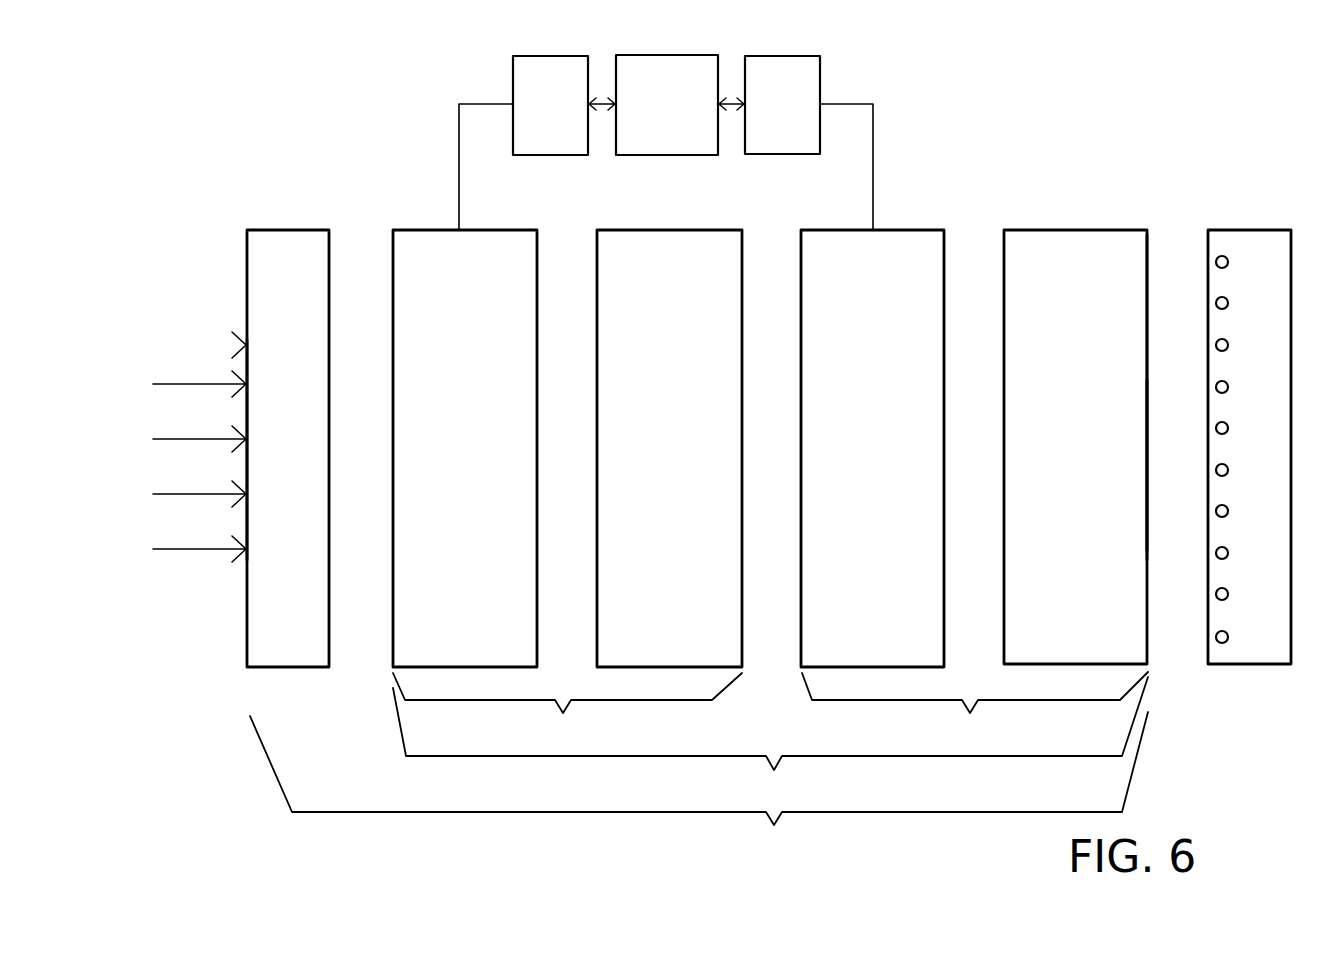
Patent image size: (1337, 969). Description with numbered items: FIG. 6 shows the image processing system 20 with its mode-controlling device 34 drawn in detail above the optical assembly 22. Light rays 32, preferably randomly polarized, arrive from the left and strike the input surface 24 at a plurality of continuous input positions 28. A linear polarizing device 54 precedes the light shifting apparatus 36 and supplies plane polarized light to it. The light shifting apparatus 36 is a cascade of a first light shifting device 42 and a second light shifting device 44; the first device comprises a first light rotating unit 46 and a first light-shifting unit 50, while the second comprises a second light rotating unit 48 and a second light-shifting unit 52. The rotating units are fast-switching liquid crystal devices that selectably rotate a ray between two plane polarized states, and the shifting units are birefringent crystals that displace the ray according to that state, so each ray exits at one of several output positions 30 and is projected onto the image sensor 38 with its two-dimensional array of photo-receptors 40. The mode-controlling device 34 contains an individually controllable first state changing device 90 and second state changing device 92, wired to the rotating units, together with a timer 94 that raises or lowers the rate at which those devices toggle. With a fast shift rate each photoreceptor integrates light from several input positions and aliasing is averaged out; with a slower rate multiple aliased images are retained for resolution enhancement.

The image processing system 20 is at (242, 797).
The optical assembly 22 is at (699, 785).
The input surface 24 is at (246, 345).
The input positions 28 is at (247, 384).
The output positions 30 is at (1147, 383).
The light rays 32 is at (206, 575).
The mode-controlling device 34 is at (666, 167).
The light shifting apparatus 36 is at (770, 740).
The image sensor 38 is at (1249, 447).
The photo-receptors 40 is at (1224, 508).
The first light shifting device 42 is at (567, 711).
The second light shifting device 44 is at (975, 711).
The first light rotating unit 46 is at (446, 624).
The second light rotating unit 48 is at (854, 624).
The first light-shifting unit 50 is at (651, 624).
The second light-shifting unit 52 is at (1058, 622).
The linear polarizing device 54 is at (276, 625).
The first state changing device 90 is at (536, 110).
The second state changing device 92 is at (769, 110).
The timer 94 is at (653, 110).